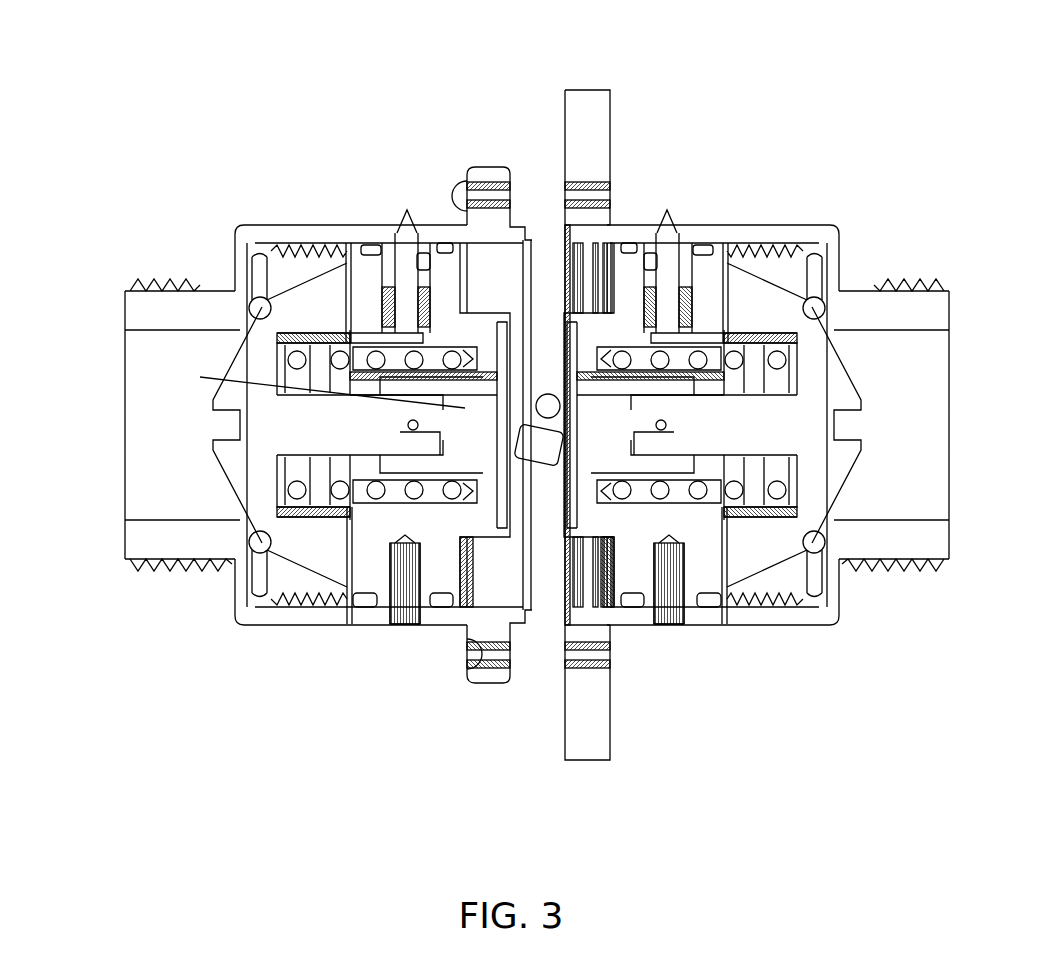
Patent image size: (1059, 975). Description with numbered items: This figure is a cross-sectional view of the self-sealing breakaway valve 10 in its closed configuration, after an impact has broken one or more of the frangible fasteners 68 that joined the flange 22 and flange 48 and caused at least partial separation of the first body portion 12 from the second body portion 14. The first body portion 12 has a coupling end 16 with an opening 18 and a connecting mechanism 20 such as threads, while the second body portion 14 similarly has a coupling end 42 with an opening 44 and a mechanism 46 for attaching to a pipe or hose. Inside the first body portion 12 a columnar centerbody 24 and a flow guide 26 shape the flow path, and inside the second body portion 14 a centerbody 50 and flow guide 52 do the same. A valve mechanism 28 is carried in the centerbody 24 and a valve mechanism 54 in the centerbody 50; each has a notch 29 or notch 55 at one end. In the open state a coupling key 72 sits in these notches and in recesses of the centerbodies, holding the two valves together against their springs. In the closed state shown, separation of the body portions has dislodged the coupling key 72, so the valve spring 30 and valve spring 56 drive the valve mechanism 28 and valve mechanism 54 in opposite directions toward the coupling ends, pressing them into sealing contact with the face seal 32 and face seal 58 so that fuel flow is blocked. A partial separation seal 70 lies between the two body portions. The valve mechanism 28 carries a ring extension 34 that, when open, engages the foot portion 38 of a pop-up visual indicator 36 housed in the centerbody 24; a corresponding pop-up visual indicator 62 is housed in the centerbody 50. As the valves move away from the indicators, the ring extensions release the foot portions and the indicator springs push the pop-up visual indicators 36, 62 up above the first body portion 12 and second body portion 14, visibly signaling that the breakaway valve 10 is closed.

The breakaway valve 10 is at (743, 57).
The first body portion 12 is at (785, 237).
The second body portion 14 is at (320, 247).
The coupling end 16 is at (947, 317).
The opening 18 is at (877, 487).
The mechanism 20 is at (905, 282).
The flange 22 is at (598, 172).
The centerbody 24 is at (705, 533).
The flow guide 26 is at (753, 545).
The valve mechanism 28 is at (738, 443).
The notch 29 is at (650, 420).
The valve spring 30 is at (662, 487).
The face seal 32 is at (814, 314).
The ring extension 34 is at (770, 357).
The pop-up visual indicator 36 is at (673, 263).
The foot portion 38 is at (672, 333).
The coupling end 42 is at (160, 527).
The opening 44 is at (162, 481).
The mechanism 46 is at (155, 567).
The flange 48 is at (477, 165).
The centerbody 50 is at (430, 525).
The flow guide 52 is at (298, 590).
The valve mechanism 54 is at (296, 443).
The notch 55 is at (413, 430).
The valve spring 56 is at (298, 497).
The face seal 58 is at (260, 314).
The pop-up visual indicator 62 is at (393, 270).
The frangible fasteners 68 is at (455, 188).
The partial separation seal 70 is at (520, 222).
The coupling key 72 is at (535, 455).